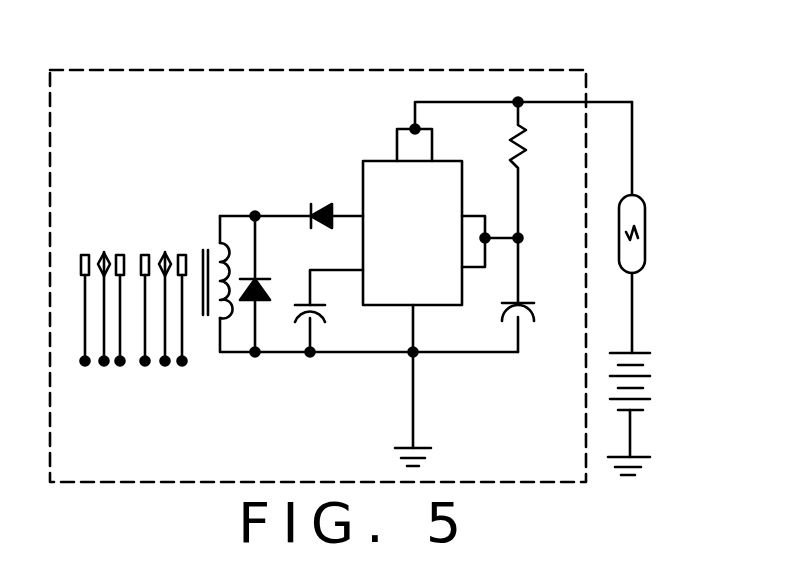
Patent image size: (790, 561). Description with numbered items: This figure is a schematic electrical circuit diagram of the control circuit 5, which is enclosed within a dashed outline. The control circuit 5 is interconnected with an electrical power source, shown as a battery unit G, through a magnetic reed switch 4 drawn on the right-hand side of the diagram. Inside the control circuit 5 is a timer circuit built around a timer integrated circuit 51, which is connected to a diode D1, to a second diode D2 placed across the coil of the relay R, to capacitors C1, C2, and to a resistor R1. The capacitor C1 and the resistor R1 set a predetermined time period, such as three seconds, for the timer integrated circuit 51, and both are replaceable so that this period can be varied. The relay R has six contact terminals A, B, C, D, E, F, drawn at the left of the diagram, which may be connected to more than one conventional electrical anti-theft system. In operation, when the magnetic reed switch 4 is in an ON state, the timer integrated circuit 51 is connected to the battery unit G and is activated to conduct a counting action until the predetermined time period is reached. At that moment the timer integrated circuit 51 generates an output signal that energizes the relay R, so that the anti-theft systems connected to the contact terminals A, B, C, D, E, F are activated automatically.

The control circuit 5 is at (404, 68).
The timer integrated circuit 51 is at (375, 160).
The magnetic reed switch 4 is at (641, 192).
The battery unit G is at (652, 372).
The relay R is at (210, 236).
The diode D1 is at (325, 198).
The diode D2 is at (271, 284).
The capacitor C1 is at (537, 295).
The capacitor C2 is at (329, 311).
The resistor R1 is at (540, 170).
The contact terminal A is at (81, 327).
The contact terminal B is at (99, 325).
The contact terminal C is at (115, 327).
The contact terminal D is at (144, 327).
The contact terminal E is at (163, 325).
The contact terminal F is at (184, 327).